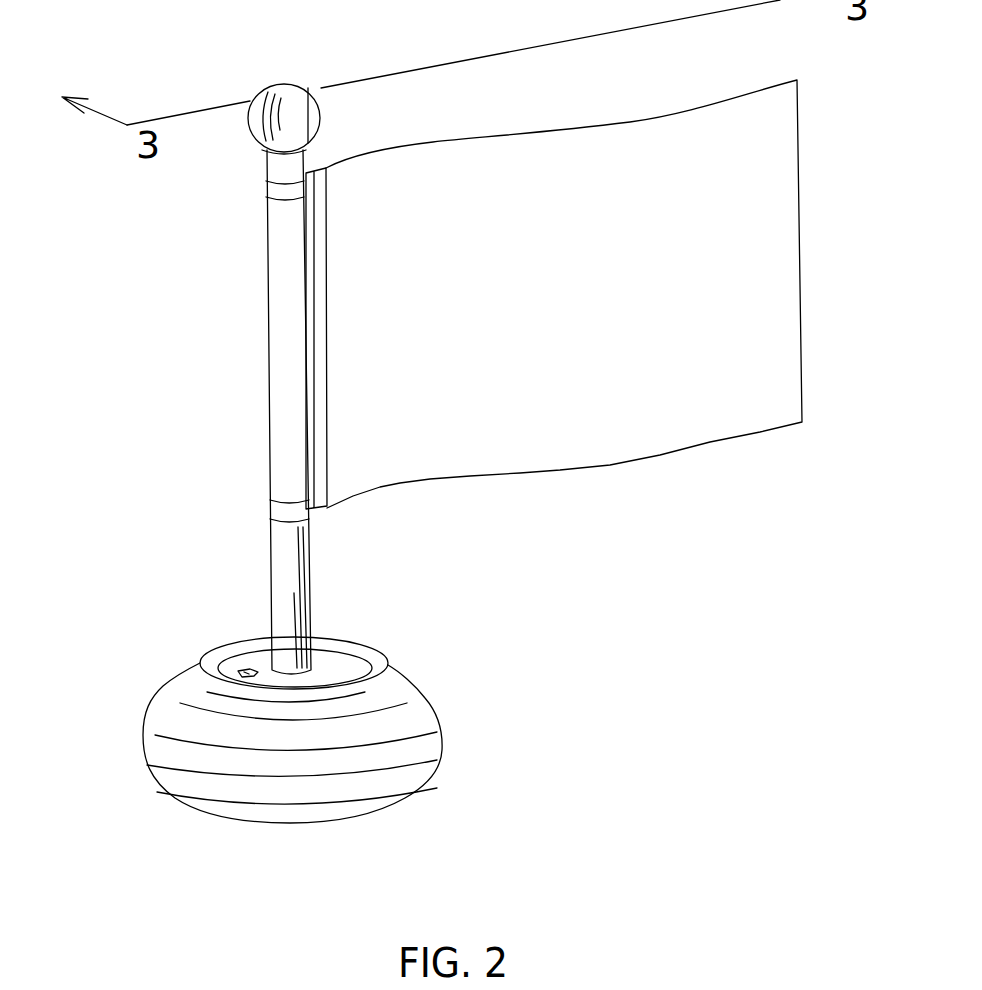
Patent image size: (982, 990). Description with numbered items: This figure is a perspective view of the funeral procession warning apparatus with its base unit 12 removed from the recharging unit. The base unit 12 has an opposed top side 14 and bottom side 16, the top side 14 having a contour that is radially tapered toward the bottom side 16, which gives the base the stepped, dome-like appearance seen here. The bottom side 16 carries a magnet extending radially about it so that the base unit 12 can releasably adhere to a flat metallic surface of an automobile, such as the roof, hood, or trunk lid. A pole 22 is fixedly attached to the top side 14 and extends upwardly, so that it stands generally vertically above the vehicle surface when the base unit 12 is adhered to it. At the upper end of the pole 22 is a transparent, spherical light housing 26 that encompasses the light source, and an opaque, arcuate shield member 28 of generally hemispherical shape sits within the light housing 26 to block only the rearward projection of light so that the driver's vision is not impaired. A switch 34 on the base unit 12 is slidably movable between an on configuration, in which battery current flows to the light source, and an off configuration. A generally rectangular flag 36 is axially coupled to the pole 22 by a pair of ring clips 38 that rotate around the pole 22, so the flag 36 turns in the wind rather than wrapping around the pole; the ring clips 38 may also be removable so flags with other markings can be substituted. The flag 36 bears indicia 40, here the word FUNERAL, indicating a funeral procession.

The base unit 12 is at (475, 714).
The top side 14 is at (338, 662).
The bottom side 16 is at (180, 800).
The pole 22 is at (282, 575).
The light housing 26 is at (322, 115).
The shield member 28 is at (254, 126).
The switch 34 is at (238, 668).
The flag 36 is at (722, 420).
The ring clips 38 is at (280, 190).
The indicia 40 is at (575, 275).